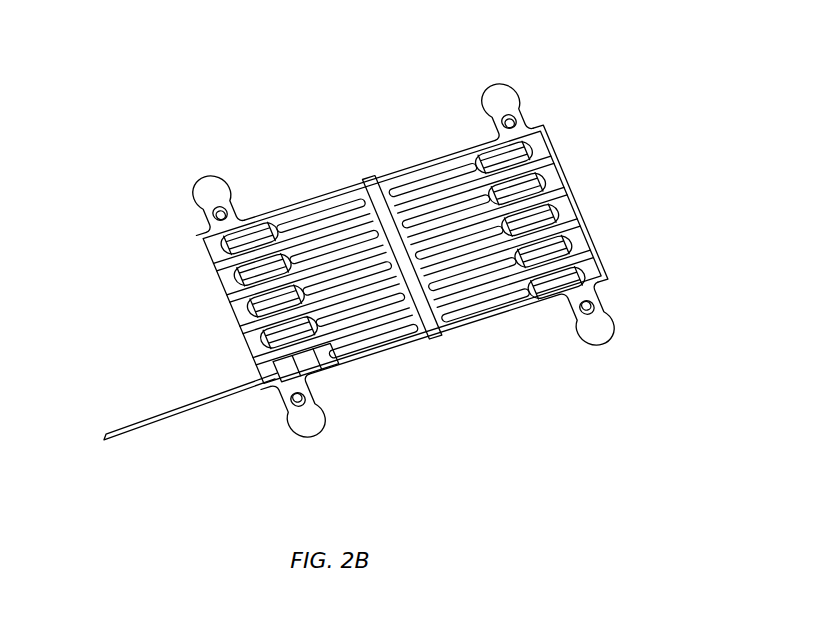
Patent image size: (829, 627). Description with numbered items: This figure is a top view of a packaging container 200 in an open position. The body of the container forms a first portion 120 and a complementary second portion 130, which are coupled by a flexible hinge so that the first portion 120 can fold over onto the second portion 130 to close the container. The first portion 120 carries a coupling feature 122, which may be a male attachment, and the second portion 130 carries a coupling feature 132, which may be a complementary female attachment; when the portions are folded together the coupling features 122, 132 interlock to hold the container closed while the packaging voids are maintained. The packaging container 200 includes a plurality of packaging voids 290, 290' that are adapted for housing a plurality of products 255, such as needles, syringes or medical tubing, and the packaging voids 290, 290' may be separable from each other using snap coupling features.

The packaging container 200 is at (132, 124).
The first portion 120 is at (323, 191).
The second portion 130 is at (410, 168).
The coupling feature 132 is at (518, 118).
The coupling feature 122 is at (292, 412).
The packaging void 290 is at (547, 145).
The packaging void 290' is at (603, 273).
The products 255 is at (315, 372).